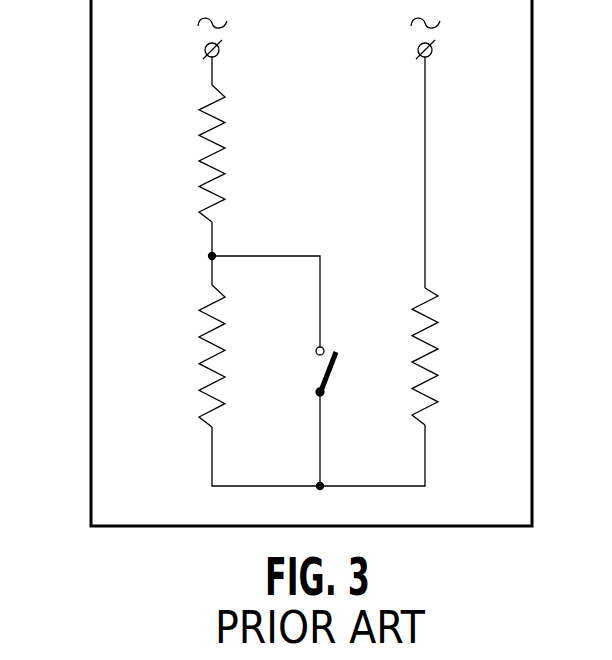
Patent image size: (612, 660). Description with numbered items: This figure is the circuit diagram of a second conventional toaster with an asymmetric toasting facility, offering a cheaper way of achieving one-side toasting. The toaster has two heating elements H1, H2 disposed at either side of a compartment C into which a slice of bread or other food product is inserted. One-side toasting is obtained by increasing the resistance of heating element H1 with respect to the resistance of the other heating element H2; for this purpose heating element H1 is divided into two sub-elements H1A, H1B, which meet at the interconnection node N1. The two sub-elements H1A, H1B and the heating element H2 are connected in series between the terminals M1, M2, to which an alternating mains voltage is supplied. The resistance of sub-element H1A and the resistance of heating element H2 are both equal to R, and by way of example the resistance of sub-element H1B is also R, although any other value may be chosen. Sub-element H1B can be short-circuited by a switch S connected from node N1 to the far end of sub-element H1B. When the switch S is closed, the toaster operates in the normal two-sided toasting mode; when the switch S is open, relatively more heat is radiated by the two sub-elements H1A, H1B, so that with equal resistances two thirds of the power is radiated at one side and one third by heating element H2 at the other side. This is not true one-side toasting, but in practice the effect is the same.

The compartment C is at (91, 311).
The terminal M1 is at (205, 50).
The terminal M2 is at (432, 50).
The heating element H1 is at (145, 247).
The sub-element H1A is at (204, 142).
The sub-element H1B is at (205, 342).
The interconnection node N1 is at (210, 256).
The switch S is at (326, 367).
The heating element H2 is at (440, 346).